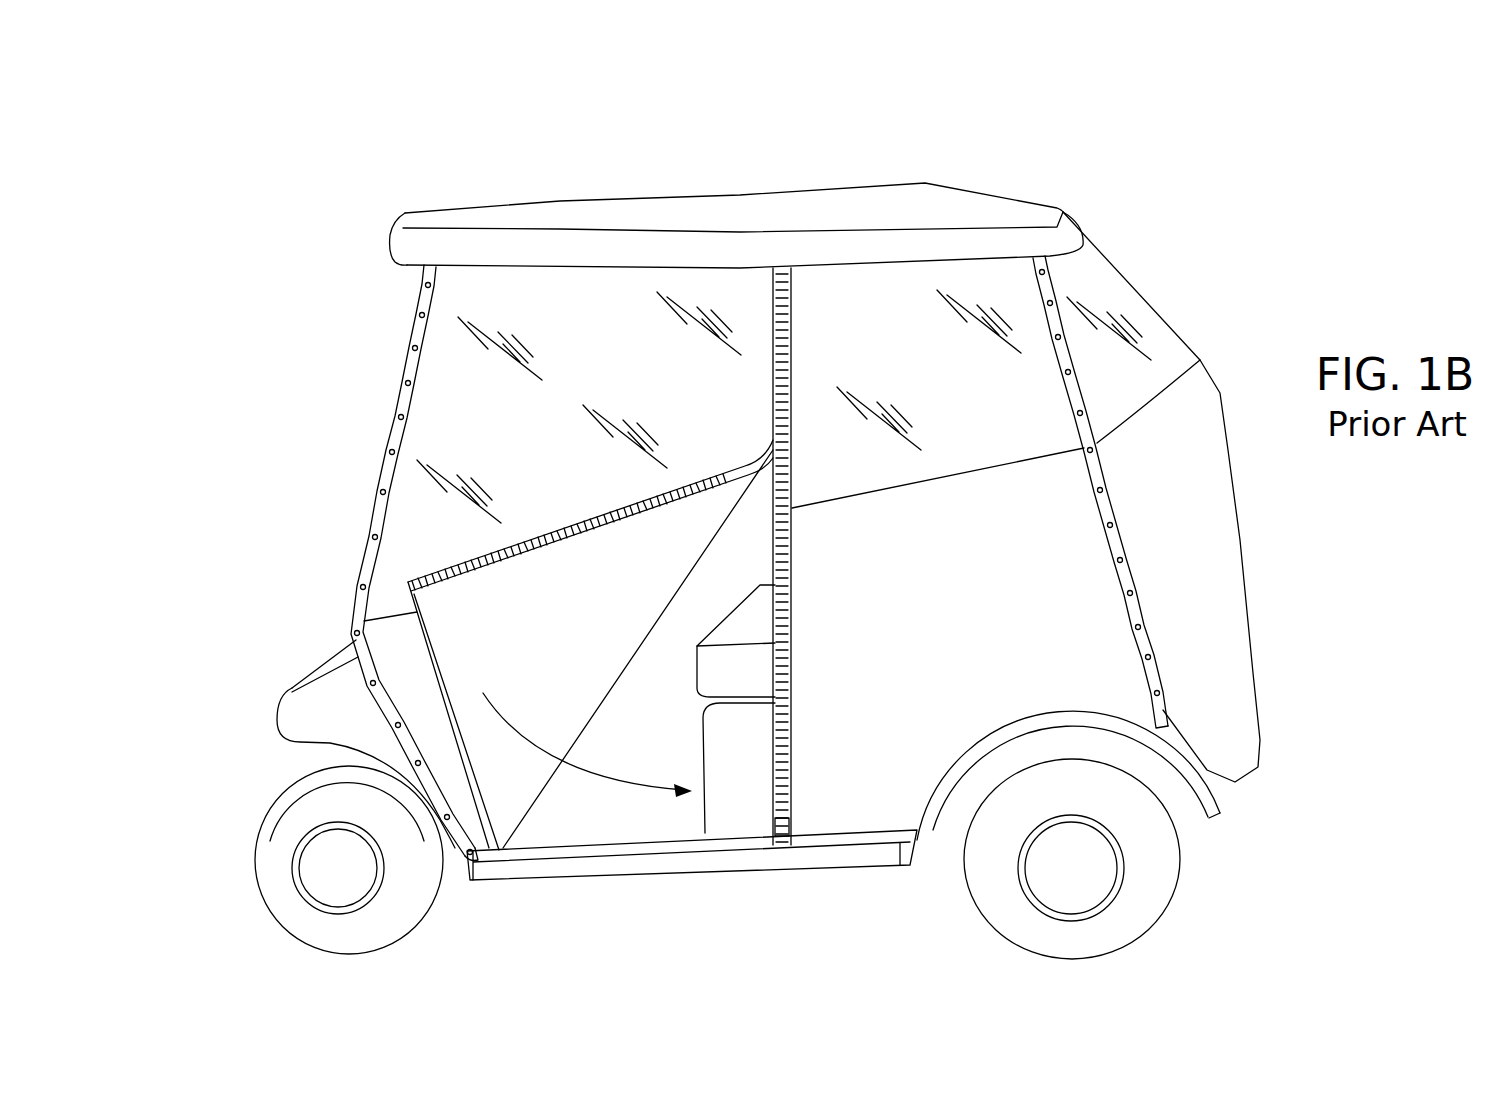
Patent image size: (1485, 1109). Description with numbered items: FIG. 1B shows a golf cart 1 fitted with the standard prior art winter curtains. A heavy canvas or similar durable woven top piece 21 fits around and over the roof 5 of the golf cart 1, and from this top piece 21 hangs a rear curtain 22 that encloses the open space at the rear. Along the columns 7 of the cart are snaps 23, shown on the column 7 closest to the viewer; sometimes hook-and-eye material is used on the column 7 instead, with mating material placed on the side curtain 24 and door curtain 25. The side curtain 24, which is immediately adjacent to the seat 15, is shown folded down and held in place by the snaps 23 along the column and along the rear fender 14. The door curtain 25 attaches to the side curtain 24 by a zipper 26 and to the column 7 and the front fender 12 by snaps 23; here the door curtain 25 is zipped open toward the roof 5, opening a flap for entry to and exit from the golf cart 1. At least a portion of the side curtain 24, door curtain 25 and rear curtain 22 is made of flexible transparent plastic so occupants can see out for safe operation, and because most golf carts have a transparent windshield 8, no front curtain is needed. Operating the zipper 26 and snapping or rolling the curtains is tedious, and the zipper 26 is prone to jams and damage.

The golf cart 1 is at (245, 214).
The roof 5 is at (818, 213).
The column 7 is at (403, 365).
The transparent windshield 8 is at (360, 384).
The front fender 12 is at (303, 707).
The rear fender 14 is at (1170, 737).
The seat 15 is at (757, 675).
The top piece 21 is at (982, 238).
The rear curtain 22 is at (1115, 300).
The snaps 23 is at (413, 350).
The side curtain 24 is at (888, 778).
The door curtain 25 is at (540, 310).
The zipper 26 is at (772, 297).